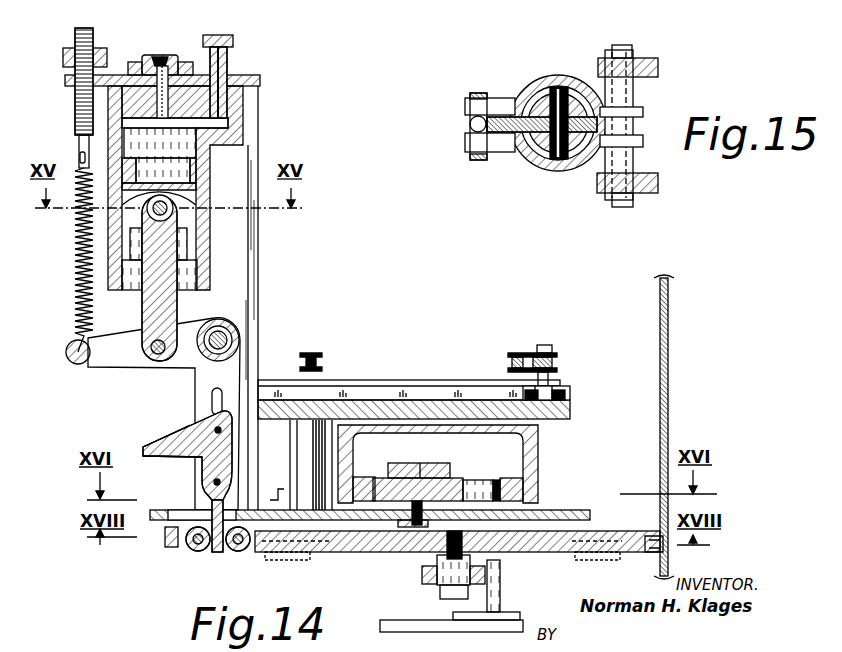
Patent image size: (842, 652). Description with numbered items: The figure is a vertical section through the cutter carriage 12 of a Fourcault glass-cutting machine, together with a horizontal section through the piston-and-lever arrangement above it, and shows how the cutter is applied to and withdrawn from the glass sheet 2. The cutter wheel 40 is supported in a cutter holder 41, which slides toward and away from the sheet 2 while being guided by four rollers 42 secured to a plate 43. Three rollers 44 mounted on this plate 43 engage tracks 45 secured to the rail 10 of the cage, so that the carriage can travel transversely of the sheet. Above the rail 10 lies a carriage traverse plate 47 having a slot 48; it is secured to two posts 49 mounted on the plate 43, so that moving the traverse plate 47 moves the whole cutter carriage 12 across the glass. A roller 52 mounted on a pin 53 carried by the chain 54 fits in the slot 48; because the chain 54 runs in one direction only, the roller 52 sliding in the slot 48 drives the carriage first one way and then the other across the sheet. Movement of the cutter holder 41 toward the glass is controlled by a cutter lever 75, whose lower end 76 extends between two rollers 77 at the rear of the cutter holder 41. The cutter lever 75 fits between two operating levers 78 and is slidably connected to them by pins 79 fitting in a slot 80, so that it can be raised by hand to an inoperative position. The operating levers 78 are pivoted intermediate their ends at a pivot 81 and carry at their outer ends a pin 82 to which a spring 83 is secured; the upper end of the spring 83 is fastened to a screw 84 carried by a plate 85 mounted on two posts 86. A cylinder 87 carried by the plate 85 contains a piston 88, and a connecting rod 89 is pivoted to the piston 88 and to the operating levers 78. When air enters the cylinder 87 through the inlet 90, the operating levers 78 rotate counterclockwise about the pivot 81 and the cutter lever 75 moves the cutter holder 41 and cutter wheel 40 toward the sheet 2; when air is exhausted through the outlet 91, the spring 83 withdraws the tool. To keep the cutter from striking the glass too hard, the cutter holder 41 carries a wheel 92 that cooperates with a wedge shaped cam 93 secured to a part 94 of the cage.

In FIG. 14, the glass sheet 2 is at (668, 347).
In FIG. 14, the rail 10 is at (540, 443).
In FIG. 14, the cutter carriage 12 is at (452, 478).
In FIG. 14, the cutter wheel 40 is at (652, 538).
In FIG. 14, the cutter holder 41 is at (362, 548).
In FIG. 14, the rollers 42 is at (270, 552).
In FIG. 14, the plate 43 is at (591, 518).
In FIG. 14, the rollers 44 is at (478, 488).
In FIG. 14, the tracks 45 is at (362, 477).
In FIG. 14, the carriage traverse plate 47 is at (397, 385).
In FIG. 14, the slot 48 is at (432, 394).
In FIG. 14, the posts 49 is at (297, 433).
In FIG. 14, the roller 52 is at (566, 396).
In FIG. 14, the pin 53 is at (548, 380).
In FIG. 14, the chain 54 is at (323, 358).
In FIG. 14, the cutter lever 75 is at (190, 450).
In FIG. 14, the lower end 76 is at (212, 550).
In FIG. 14, the rollers 77 is at (194, 546).
In FIG. 14, the operating levers 78 is at (110, 360).
In FIG. 15, the operating levers 78 is at (500, 108).
In FIG. 14, the pins 79 is at (200, 427).
In FIG. 14, the slot 80 is at (211, 398).
In FIG. 14, the pivot 81 is at (231, 338).
In FIG. 15, the pivot 81 is at (640, 96).
In FIG. 14, the pin 82 is at (77, 362).
In FIG. 14, the spring 83 is at (73, 302).
In FIG. 14, the screw 84 is at (84, 98).
In FIG. 14, the plate 85 is at (119, 74).
In FIG. 14, the posts 86 is at (250, 125).
In FIG. 15, the posts 86 is at (660, 70).
In FIG. 14, the cylinder 87 is at (207, 250).
In FIG. 15, the cylinder 87 is at (568, 82).
In FIG. 14, the piston 88 is at (190, 182).
In FIG. 15, the piston 88 is at (546, 90).
In FIG. 14, the connecting rod 89 is at (145, 312).
In FIG. 15, the connecting rod 89 is at (531, 158).
In FIG. 14, the inlet 90 is at (163, 60).
In FIG. 14, the outlet 91 is at (222, 36).
In FIG. 14, the wheel 92 is at (422, 572).
In FIG. 14, the wedge shaped cam 93 is at (455, 614).
In FIG. 14, the part of the cage 94 is at (428, 626).